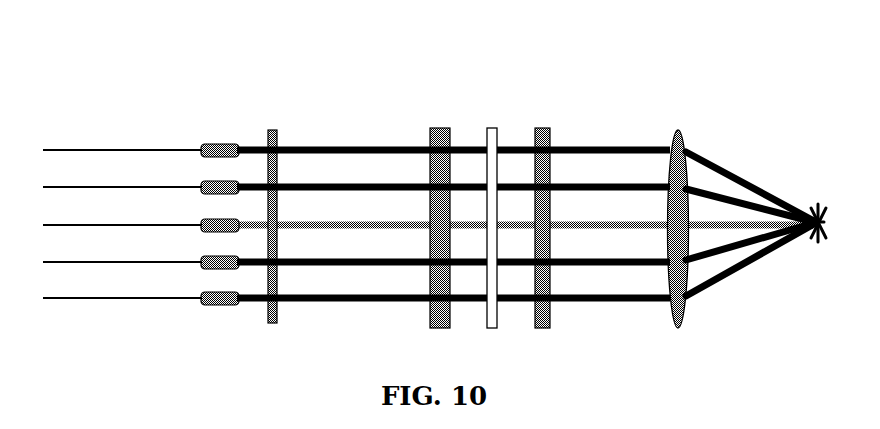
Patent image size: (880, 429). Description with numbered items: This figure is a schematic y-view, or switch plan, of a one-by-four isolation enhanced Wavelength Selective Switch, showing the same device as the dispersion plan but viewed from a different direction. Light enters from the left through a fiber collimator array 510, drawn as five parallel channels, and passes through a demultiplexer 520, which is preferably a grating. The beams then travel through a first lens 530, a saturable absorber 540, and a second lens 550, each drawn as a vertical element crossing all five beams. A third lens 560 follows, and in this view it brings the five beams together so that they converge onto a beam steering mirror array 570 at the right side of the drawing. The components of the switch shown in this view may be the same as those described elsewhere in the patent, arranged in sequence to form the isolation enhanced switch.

The fiber collimator array 510 is at (213, 143).
The demultiplexer 520 is at (272, 128).
The lens 530 is at (437, 133).
The saturable absorber 540 is at (489, 127).
The lens 550 is at (541, 128).
The lens 560 is at (675, 127).
The beam steering mirror array 570 is at (817, 242).